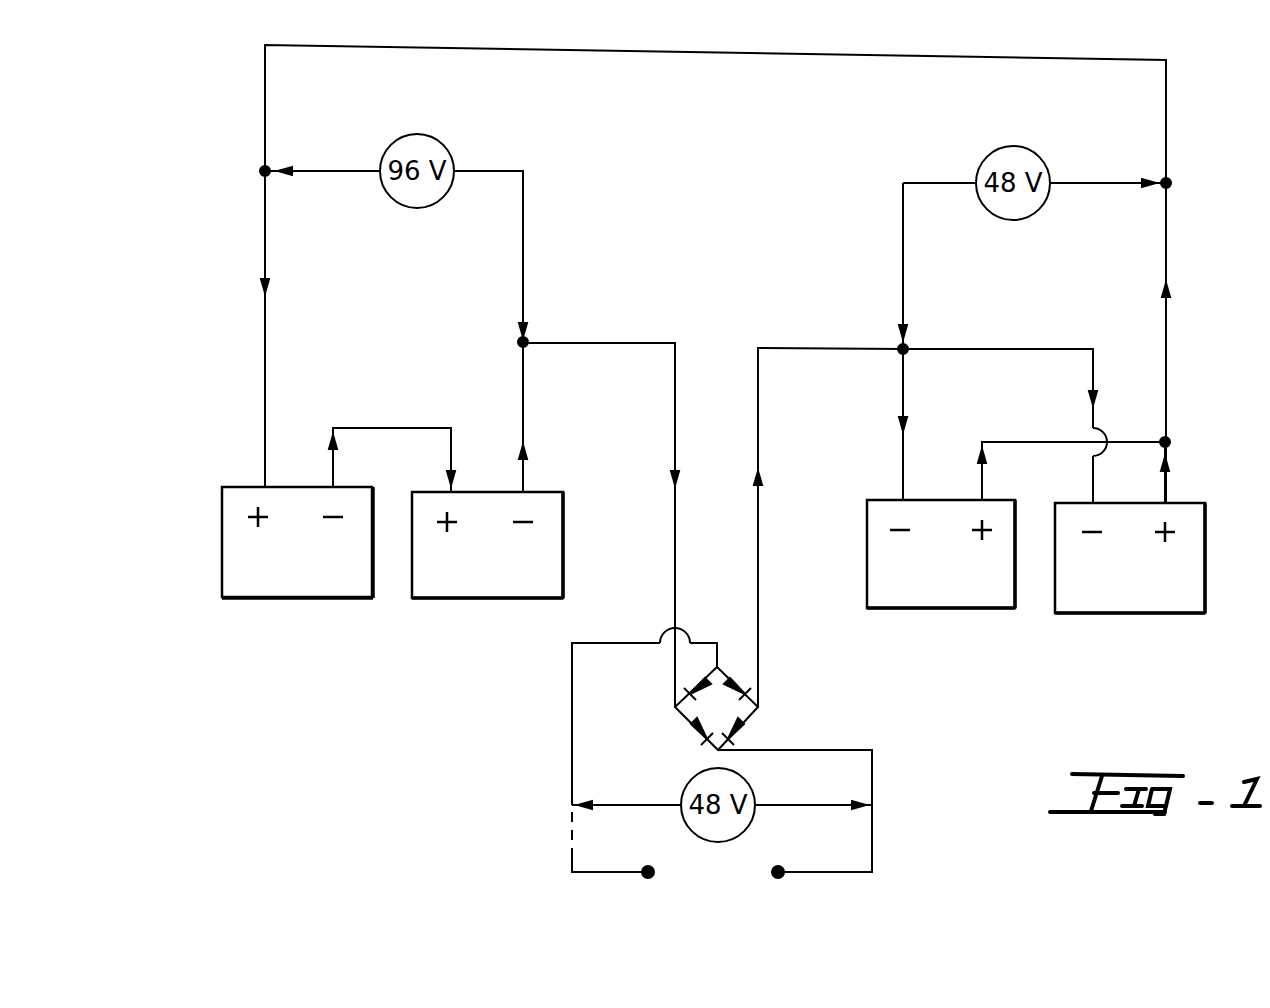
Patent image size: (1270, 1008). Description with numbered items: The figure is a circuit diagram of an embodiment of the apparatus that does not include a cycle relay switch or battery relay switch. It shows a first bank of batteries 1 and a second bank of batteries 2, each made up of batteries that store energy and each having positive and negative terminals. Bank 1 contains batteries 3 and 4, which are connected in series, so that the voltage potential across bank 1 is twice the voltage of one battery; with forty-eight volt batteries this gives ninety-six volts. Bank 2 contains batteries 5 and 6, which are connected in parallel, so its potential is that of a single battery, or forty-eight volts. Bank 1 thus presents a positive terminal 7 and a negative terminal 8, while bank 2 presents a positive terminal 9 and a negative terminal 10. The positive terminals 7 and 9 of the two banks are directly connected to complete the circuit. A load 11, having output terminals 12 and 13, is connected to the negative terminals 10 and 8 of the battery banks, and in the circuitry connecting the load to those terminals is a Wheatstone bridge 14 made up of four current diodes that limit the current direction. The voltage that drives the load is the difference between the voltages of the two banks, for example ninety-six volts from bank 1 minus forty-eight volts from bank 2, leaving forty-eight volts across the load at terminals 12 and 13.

The first bank of batteries 1 is at (386, 510).
The second bank of batteries 2 is at (1032, 552).
The battery 3 is at (222, 557).
The battery 4 is at (563, 535).
The battery 5 is at (867, 574).
The battery 6 is at (1205, 578).
The positive terminal 7 is at (256, 172).
The negative terminal 8 is at (527, 346).
The positive terminal 9 is at (1172, 183).
The negative terminal 10 is at (907, 353).
The load 11 is at (733, 884).
The output terminal 12 is at (782, 868).
The output terminal 13 is at (646, 866).
The Wheatstone bridge 14 is at (760, 708).